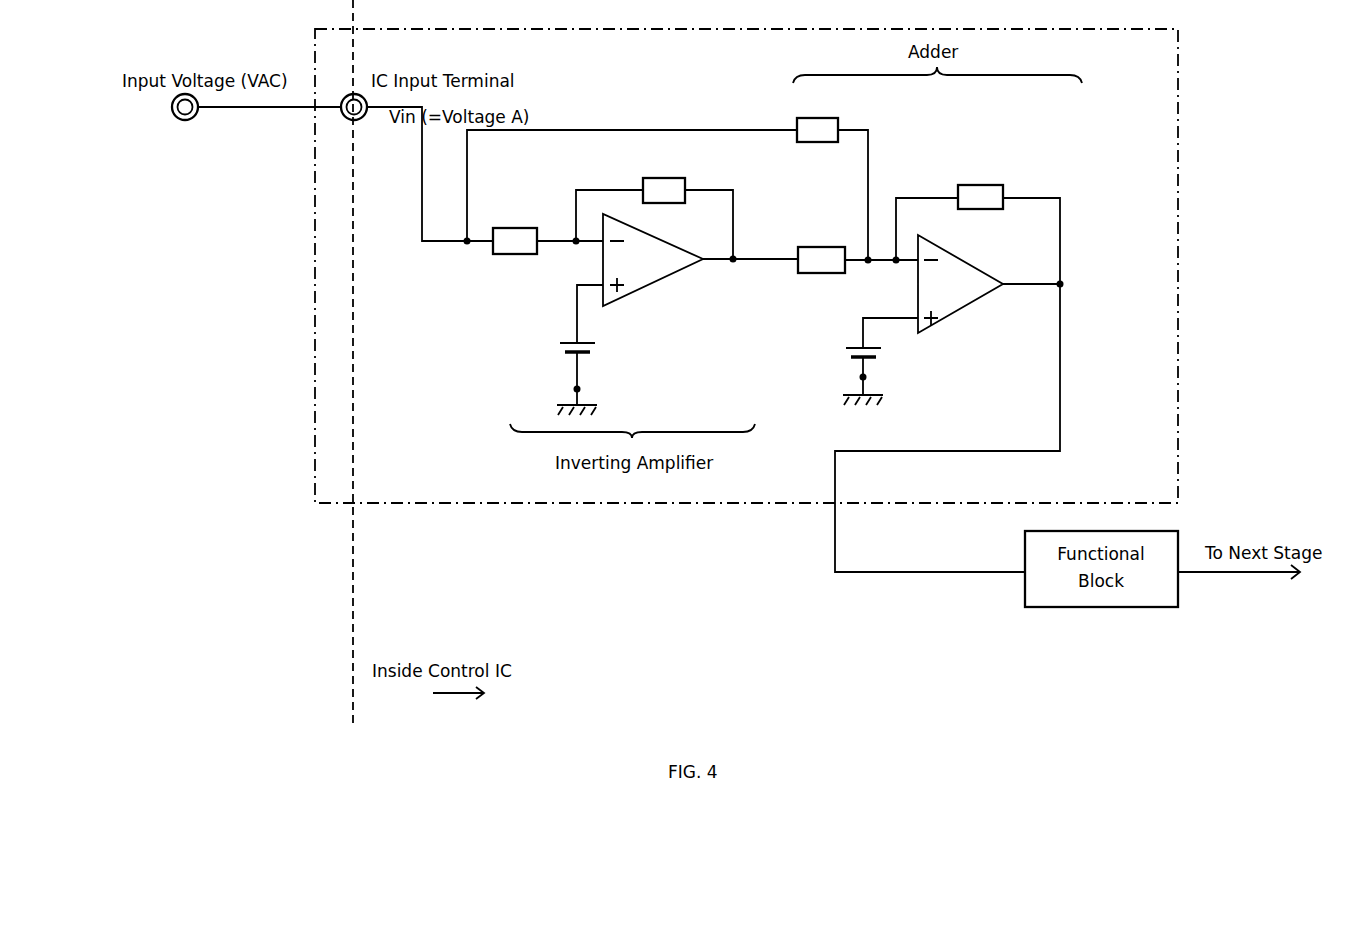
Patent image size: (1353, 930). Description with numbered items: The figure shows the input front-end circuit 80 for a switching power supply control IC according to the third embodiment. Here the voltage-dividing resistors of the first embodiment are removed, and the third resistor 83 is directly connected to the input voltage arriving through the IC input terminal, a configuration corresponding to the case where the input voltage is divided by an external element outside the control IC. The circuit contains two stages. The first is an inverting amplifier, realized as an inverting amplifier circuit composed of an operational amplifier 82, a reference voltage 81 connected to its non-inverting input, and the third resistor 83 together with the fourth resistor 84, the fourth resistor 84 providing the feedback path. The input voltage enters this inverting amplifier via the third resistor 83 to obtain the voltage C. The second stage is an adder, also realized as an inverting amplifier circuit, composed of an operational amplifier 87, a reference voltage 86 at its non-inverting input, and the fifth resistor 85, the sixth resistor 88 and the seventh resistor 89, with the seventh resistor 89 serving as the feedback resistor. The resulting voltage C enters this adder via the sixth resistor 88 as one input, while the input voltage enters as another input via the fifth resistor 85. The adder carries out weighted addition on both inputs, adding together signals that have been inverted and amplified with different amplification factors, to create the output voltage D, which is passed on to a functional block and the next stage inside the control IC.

The input front-end circuit 80 is at (450, 28).
The reference voltage 81 is at (560, 349).
The operational amplifier 82 is at (655, 287).
The resistor R3 83 is at (510, 254).
The resistor R4 84 is at (658, 203).
The resistor R5 85 is at (825, 142).
The reference voltage 86 is at (843, 356).
The operational amplifier 87 is at (970, 308).
The resistor R6 88 is at (822, 273).
The resistor R7 89 is at (978, 209).